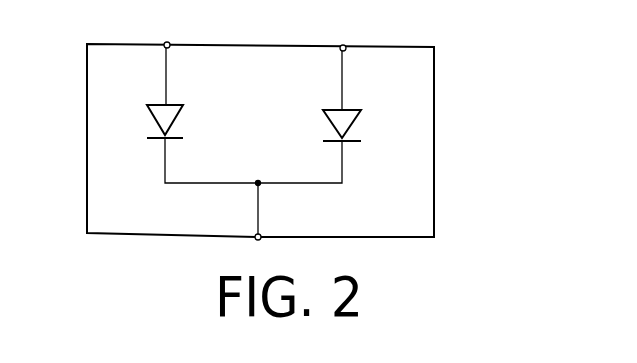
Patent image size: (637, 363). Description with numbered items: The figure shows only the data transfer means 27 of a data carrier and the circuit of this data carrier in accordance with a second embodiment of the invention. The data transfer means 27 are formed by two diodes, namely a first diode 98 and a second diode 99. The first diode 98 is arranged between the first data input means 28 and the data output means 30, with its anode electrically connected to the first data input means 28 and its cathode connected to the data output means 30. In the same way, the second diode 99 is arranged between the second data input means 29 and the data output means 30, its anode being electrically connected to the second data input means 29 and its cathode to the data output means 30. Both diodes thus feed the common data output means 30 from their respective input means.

The data transfer means 27 is at (437, 137).
The first data input means 28 is at (346, 46).
The second data input means 29 is at (164, 43).
The data output means 30 is at (261, 239).
The first diode 98 is at (345, 122).
The second diode 99 is at (155, 120).